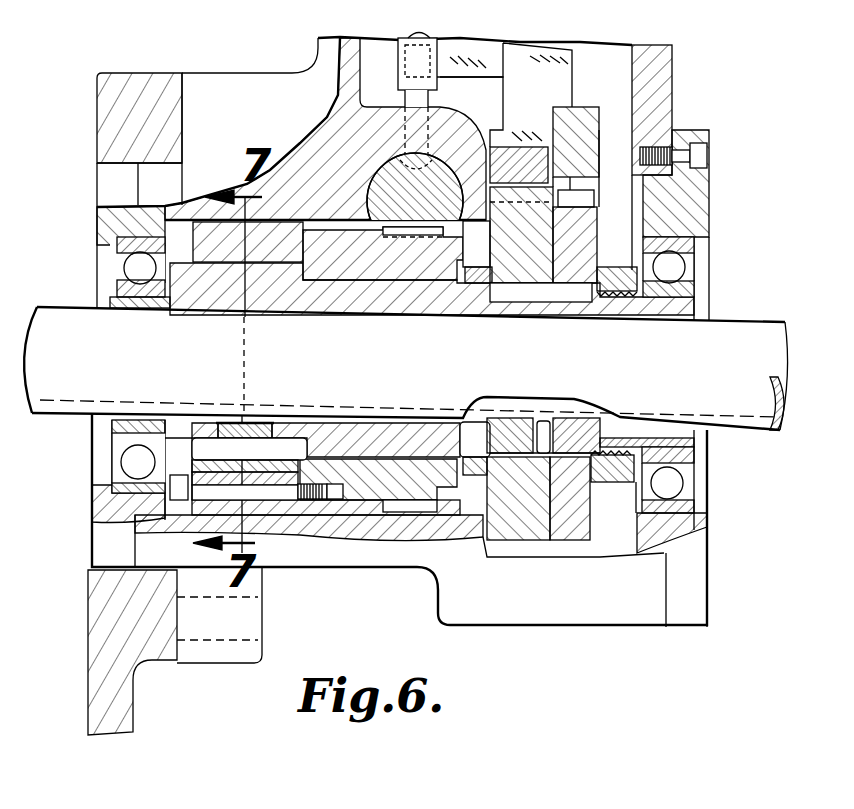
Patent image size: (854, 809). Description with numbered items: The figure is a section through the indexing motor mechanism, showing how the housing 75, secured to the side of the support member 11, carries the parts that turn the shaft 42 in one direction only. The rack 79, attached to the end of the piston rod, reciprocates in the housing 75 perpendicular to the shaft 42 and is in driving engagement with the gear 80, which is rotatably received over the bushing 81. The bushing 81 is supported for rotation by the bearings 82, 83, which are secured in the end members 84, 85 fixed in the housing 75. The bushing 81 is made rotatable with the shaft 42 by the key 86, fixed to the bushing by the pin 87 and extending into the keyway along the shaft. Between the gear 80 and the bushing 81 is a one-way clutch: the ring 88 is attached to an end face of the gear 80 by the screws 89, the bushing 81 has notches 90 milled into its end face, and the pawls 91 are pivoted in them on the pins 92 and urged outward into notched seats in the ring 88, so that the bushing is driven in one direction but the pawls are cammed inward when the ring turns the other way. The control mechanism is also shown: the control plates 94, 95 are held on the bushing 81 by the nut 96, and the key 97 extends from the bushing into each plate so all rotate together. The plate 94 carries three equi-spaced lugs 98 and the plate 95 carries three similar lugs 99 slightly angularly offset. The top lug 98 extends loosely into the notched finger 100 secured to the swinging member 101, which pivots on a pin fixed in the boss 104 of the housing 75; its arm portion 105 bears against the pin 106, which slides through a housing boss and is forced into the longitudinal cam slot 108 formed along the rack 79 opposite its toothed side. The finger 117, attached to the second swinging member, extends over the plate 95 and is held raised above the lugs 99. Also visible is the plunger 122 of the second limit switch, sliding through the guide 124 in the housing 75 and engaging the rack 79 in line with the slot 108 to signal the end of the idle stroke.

The support member 11 is at (97, 130).
The shaft 42 is at (56, 307).
The housing 75 is at (380, 569).
The rack 79 is at (323, 140).
The gear 80 is at (405, 284).
The bushing 81 is at (372, 313).
The bearing 82 is at (115, 288).
The bearing 83 is at (694, 290).
The end member 84 is at (97, 232).
The end member 85 is at (710, 216).
The key 86 is at (504, 417).
The pin 87 is at (542, 420).
The ring 88 is at (289, 520).
The screws 89 is at (185, 503).
The notches 90 is at (228, 426).
The pawls 91 is at (258, 426).
The pins 92 is at (197, 442).
The control plate 94 is at (486, 246).
The control plate 95 is at (597, 233).
The nut 96 is at (624, 297).
The key 97 is at (565, 304).
The lugs 98 is at (533, 185).
The lugs 99 is at (590, 187).
The notched finger 100 is at (497, 147).
The swinging member 101 is at (572, 61).
The boss 104 is at (604, 130).
The arm portion 105 is at (472, 49).
The pin 106 is at (440, 86).
The cam slot 108 is at (345, 114).
The finger 117 is at (559, 107).
The plunger 122 is at (416, 31).
The guide 124 is at (398, 76).